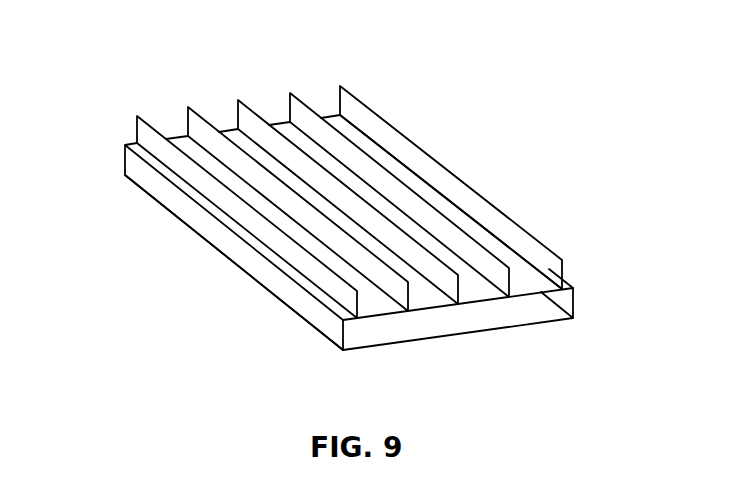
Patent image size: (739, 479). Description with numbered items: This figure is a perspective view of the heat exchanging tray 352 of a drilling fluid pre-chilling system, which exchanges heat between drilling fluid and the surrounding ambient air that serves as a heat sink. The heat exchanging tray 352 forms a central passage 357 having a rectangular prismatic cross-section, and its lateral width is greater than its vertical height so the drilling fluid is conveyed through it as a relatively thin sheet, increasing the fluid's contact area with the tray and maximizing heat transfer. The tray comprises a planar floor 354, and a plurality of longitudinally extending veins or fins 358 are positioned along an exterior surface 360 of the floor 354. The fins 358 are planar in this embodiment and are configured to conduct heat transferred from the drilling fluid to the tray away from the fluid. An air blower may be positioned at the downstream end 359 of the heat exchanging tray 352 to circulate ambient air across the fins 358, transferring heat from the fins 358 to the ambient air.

The heat exchanging tray 352 is at (343, 275).
The planar floor 354 is at (390, 301).
The central passage 357 is at (501, 312).
The fins 358 is at (142, 127).
The downstream end 359 is at (362, 348).
The exterior surface 360 is at (348, 128).